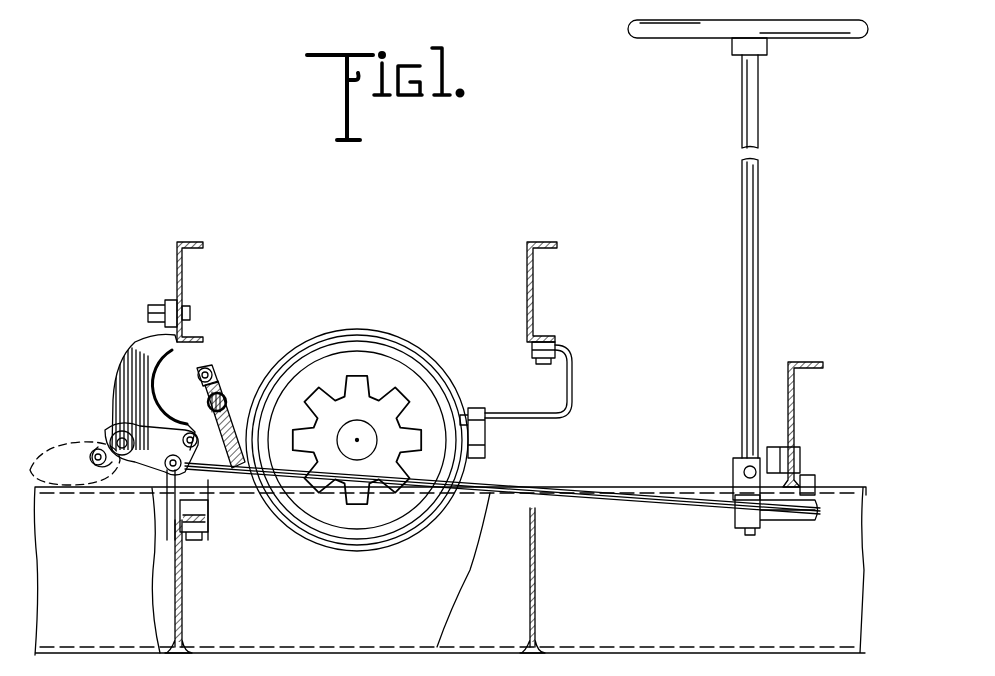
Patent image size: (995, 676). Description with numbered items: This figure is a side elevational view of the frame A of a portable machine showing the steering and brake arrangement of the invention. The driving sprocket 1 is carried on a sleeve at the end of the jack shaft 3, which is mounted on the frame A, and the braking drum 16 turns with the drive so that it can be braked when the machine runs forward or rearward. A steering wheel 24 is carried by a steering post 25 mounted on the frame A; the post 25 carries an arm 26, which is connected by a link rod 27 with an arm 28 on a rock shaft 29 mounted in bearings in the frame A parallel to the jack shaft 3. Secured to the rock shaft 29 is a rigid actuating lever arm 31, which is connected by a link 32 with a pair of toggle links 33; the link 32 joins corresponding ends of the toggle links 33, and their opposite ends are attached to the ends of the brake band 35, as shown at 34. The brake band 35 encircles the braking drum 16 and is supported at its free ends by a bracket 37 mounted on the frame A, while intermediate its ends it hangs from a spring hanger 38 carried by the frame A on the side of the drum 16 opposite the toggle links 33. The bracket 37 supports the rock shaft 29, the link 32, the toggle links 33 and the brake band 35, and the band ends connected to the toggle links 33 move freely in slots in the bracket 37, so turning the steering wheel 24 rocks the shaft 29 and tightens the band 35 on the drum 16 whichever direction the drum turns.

The driving sprocket 1 is at (355, 395).
The jack shaft 3 is at (365, 430).
The braking drum 16 is at (395, 515).
The steering wheel 24 is at (712, 35).
The steering post 25 is at (760, 255).
The arm 26 is at (813, 510).
The link rod 27 is at (500, 483).
The arm 28 is at (150, 455).
The rock shaft 29 is at (90, 456).
The actuating lever arm 31 is at (112, 437).
The link 32 is at (105, 418).
The toggle links 33 is at (197, 407).
The brake band attachment 34 is at (223, 383).
The brake band 35 is at (395, 333).
The bracket 37 is at (140, 372).
The spring hanger 38 is at (573, 405).
The frame A is at (183, 285).